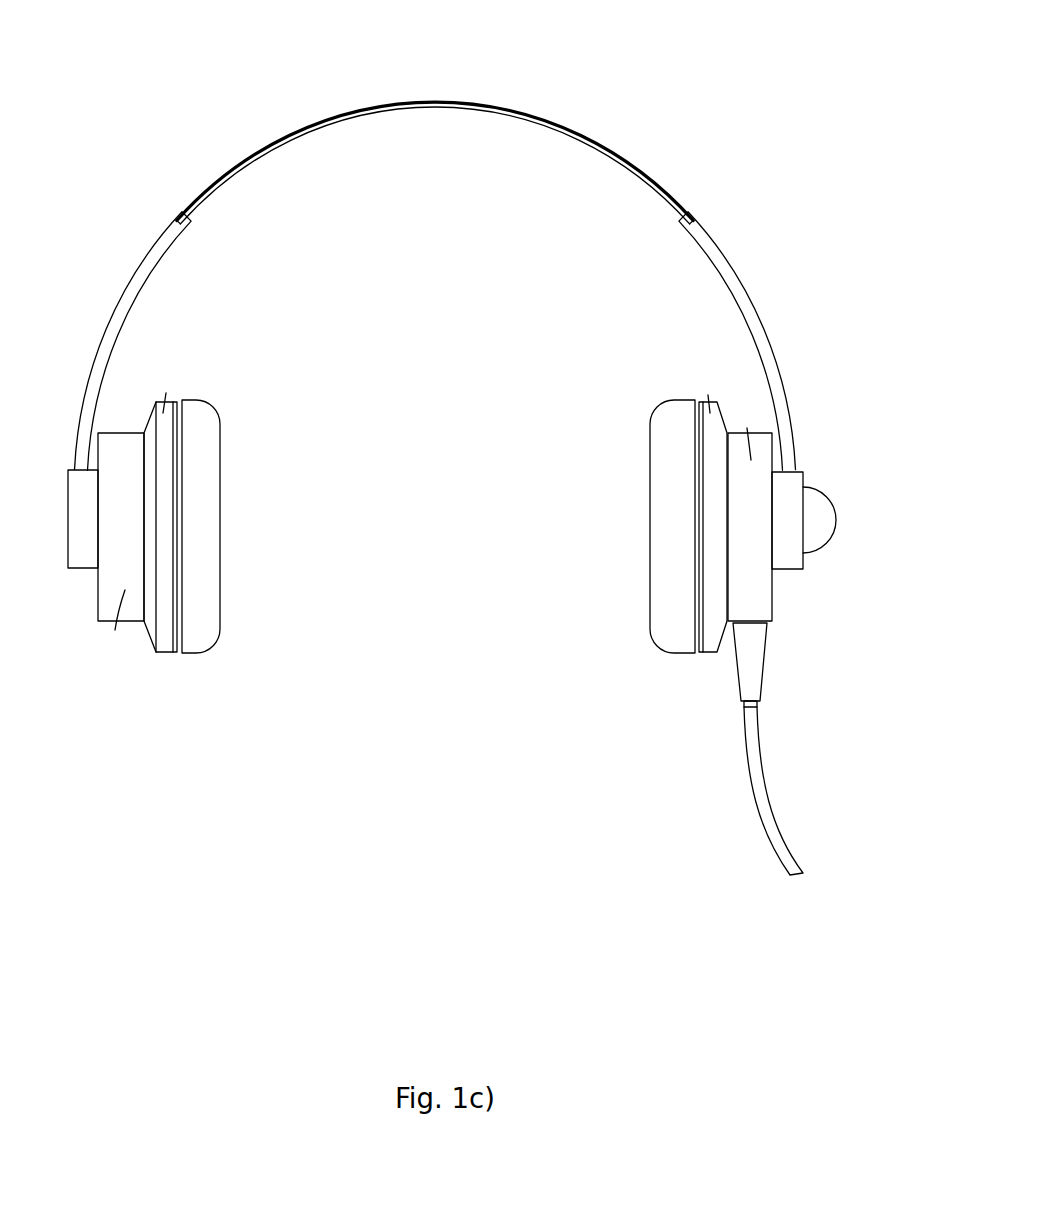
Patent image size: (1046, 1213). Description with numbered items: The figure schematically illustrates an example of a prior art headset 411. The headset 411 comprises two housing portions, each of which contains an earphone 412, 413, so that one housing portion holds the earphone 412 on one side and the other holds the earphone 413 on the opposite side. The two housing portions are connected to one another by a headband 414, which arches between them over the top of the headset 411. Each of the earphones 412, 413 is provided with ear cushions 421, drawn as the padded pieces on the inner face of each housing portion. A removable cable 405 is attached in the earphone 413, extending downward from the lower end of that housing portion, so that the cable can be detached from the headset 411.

The headset 411 is at (782, 144).
The headband 414 is at (397, 101).
The earphone 412 is at (221, 463).
The earphone 413 is at (648, 521).
The ear cushions 421 is at (197, 620).
The removable cable 405 is at (760, 798).